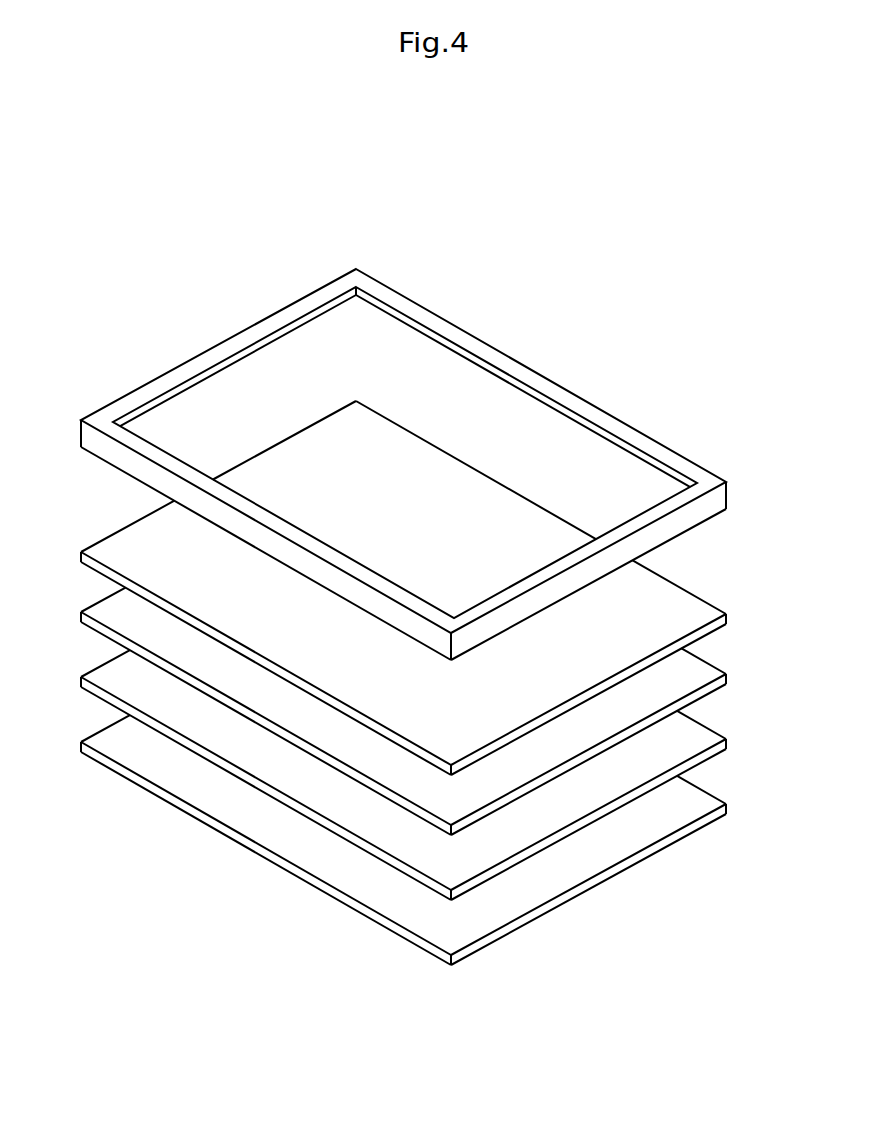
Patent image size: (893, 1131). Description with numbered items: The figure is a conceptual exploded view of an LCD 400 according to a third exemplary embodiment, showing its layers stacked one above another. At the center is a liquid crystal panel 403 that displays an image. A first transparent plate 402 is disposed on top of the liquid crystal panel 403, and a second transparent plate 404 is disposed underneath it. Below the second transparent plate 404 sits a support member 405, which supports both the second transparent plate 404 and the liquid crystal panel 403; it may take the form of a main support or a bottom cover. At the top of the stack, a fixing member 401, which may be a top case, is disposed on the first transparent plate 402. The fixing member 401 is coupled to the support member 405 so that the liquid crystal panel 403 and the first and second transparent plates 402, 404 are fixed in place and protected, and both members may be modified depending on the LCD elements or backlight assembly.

The LCD 400 is at (663, 318).
The fixing member 401 is at (728, 489).
The first transparent plate 402 is at (728, 614).
The liquid crystal panel 403 is at (728, 674).
The second transparent plate 404 is at (728, 738).
The support member 405 is at (728, 803).